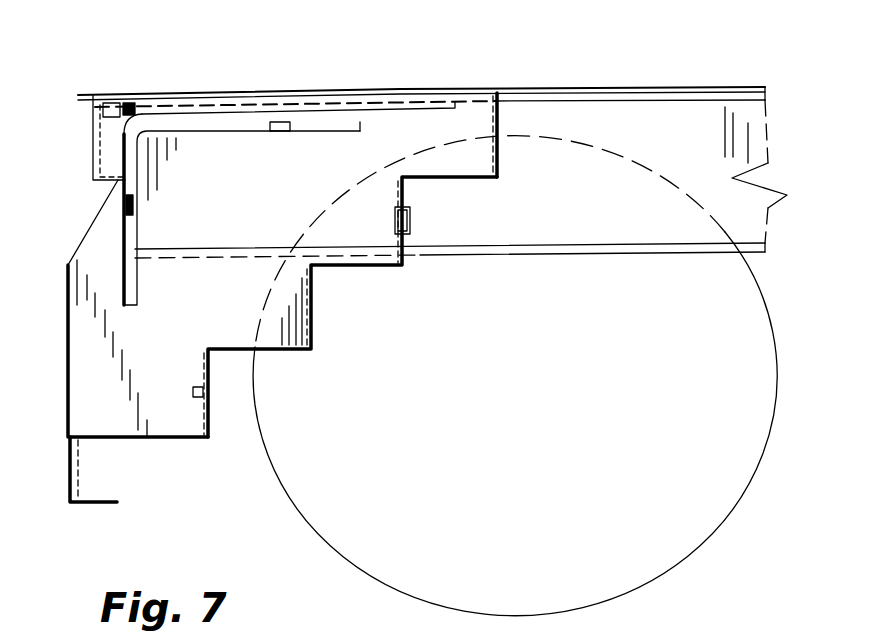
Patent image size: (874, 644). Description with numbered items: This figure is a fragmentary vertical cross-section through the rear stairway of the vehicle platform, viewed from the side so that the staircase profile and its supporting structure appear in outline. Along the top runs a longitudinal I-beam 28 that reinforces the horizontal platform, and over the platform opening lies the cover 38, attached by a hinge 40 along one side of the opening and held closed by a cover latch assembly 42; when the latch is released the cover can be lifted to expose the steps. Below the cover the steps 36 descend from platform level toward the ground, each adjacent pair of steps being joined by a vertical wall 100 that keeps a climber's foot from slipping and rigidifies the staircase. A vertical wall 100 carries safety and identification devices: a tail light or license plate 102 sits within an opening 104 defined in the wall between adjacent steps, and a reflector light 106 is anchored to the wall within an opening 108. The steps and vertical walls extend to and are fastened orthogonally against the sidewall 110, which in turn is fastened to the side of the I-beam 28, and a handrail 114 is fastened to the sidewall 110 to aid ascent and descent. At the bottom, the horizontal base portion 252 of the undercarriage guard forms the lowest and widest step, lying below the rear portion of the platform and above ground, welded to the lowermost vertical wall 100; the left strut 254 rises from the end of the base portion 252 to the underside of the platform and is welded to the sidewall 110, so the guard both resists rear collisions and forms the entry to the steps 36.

The longitudinal I-beam 28 is at (742, 213).
The step 36 is at (430, 148).
The cover 38 is at (228, 92).
The hinge 40 is at (498, 90).
The cover latch assembly 42 is at (80, 95).
The vertical wall 100 is at (497, 123).
The tail light or license plate 102 is at (193, 396).
The opening 104 is at (207, 352).
The reflector light 106 is at (410, 222).
The opening 108 is at (405, 202).
The sidewall 110 is at (168, 215).
The handrail 114 is at (123, 154).
The horizontal base portion 252 is at (67, 487).
The left strut 254 is at (95, 350).